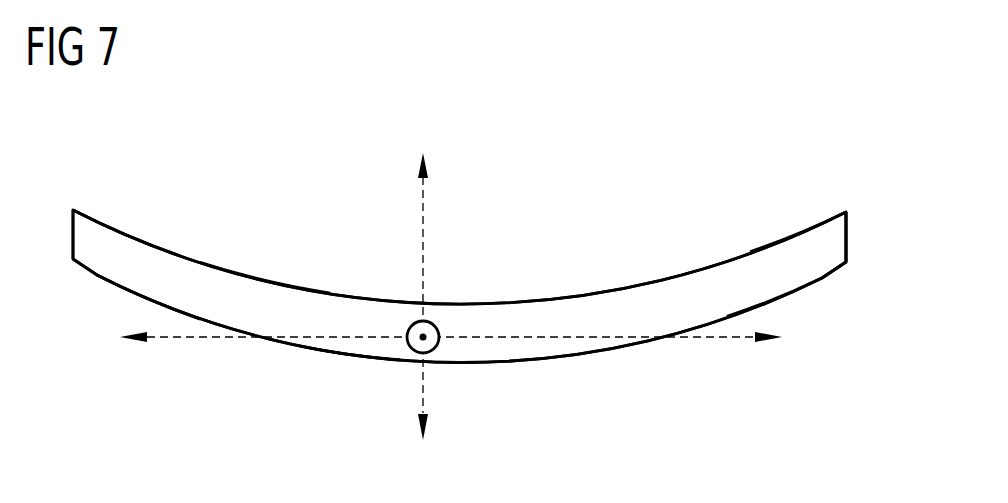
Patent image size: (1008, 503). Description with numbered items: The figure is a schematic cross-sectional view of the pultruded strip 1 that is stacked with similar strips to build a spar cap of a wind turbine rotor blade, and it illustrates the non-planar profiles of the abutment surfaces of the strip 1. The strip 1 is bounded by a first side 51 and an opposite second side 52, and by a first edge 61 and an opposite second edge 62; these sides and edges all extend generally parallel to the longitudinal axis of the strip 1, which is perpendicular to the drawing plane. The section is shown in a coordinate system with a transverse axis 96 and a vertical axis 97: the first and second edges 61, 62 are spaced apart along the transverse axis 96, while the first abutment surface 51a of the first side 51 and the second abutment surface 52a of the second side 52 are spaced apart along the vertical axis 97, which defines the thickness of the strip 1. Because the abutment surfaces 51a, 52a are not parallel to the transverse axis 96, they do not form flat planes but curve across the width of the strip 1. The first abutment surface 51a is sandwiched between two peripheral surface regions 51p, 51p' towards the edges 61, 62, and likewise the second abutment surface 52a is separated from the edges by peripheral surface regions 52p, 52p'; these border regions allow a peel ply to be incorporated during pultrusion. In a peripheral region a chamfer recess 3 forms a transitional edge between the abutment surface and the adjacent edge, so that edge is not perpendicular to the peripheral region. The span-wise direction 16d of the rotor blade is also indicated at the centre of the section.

The strip 1 is at (184, 196).
The chamfer recess 3 is at (852, 286).
The span-wise direction 16d is at (428, 342).
The first side 51 is at (553, 258).
The first abutment surface 51a is at (262, 280).
The peripheral surface region 51p is at (126, 200).
The peripheral surface region 51p' is at (798, 201).
The second side 52 is at (577, 378).
The second abutment surface 52a is at (339, 358).
The peripheral surface region 52p is at (119, 305).
The peripheral surface region 52p' is at (791, 314).
The first edge 61 is at (73, 236).
The second edge 62 is at (847, 235).
The transverse axis 96 is at (708, 340).
The vertical axis 97 is at (424, 216).